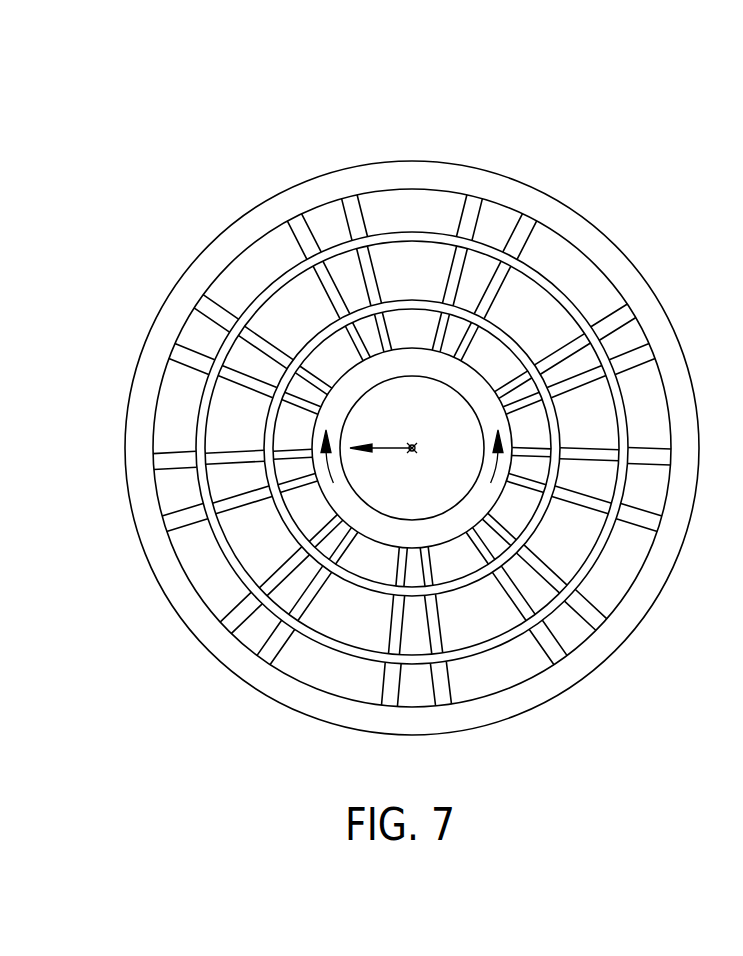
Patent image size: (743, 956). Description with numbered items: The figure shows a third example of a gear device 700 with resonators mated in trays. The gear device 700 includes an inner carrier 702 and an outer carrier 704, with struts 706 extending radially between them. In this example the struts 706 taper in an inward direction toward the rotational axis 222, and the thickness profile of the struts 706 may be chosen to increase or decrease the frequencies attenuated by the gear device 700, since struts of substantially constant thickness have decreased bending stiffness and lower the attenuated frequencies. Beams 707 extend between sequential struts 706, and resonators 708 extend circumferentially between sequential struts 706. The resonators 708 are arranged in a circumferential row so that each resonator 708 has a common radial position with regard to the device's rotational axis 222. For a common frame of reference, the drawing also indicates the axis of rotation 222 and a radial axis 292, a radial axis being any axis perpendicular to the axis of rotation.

The gear device 700 is at (705, 107).
The outer carrier 704 is at (250, 222).
The struts 706 is at (175, 347).
The beams 707 is at (357, 302).
The resonators 708 is at (418, 266).
The inner carrier 702 is at (412, 380).
The radial axis 292 is at (407, 451).
The axis of rotation 222 is at (417, 453).